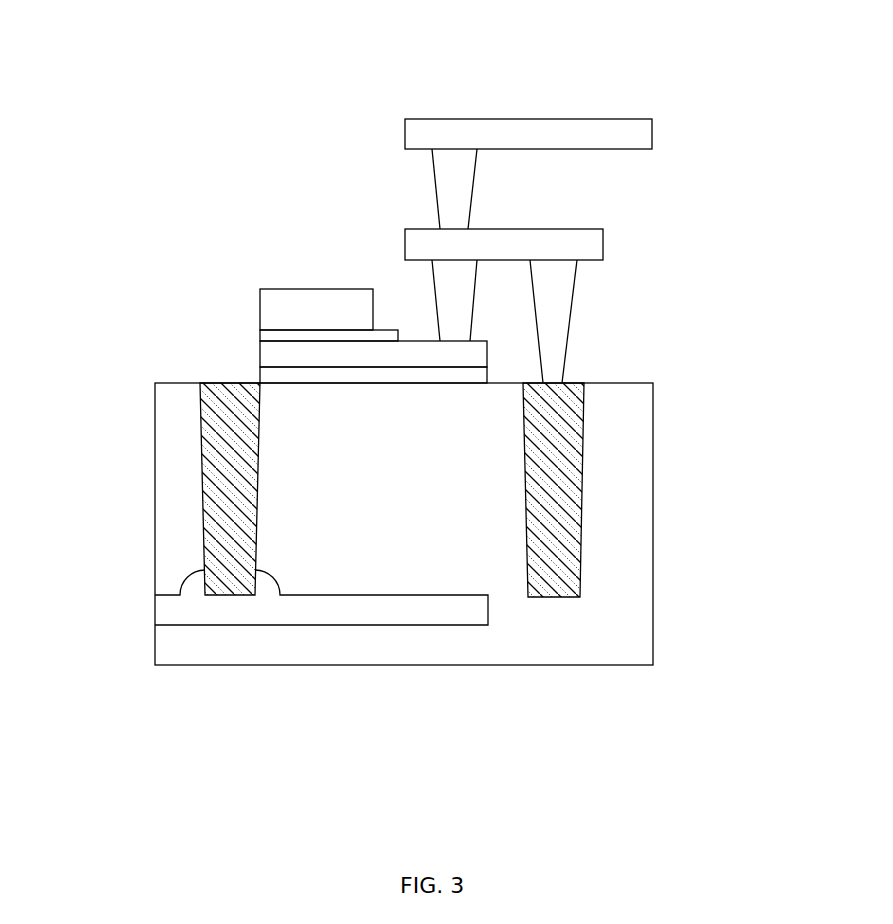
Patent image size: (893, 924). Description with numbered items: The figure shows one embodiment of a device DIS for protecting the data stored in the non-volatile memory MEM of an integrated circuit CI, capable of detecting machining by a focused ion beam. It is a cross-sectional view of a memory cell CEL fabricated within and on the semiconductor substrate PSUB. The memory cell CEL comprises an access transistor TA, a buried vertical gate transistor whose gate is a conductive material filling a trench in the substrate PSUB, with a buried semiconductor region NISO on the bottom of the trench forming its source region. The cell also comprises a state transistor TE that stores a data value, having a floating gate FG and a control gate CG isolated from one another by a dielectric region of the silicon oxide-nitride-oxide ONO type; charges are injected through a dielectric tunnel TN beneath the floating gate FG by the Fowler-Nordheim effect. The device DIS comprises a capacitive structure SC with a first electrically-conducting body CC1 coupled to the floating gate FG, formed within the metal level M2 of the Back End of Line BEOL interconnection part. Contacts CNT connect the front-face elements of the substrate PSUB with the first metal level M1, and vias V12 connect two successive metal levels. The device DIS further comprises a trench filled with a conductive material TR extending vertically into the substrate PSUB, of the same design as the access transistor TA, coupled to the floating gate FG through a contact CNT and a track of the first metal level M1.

The semiconductor substrate PSUB is at (603, 657).
The buried semiconductor region NISO is at (173, 610).
The access transistor TA is at (243, 486).
The trench filled with a conductive material TR is at (557, 505).
The dielectric tunnel TN is at (260, 376).
The floating gate FG is at (373, 354).
The silicon oxide-nitride-oxide dielectric region ONO is at (260, 335).
The control gate CG is at (316, 309).
The first metal level M1 is at (504, 245).
The metal level M2 is at (528, 134).
The vias V12 is at (467, 185).
The contact CNT is at (463, 307).
The integrated circuit CI is at (150, 175).
The non-volatile memory MEM is at (208, 260).
The state transistor TE is at (303, 268).
The memory cell CEL is at (160, 307).
The capacitive structure SC is at (565, 108).
The first electrically-conducting body CC1 is at (623, 125).
The Back End of Line interconnection part BEOL is at (663, 107).
The device for protecting the data DIS is at (617, 196).